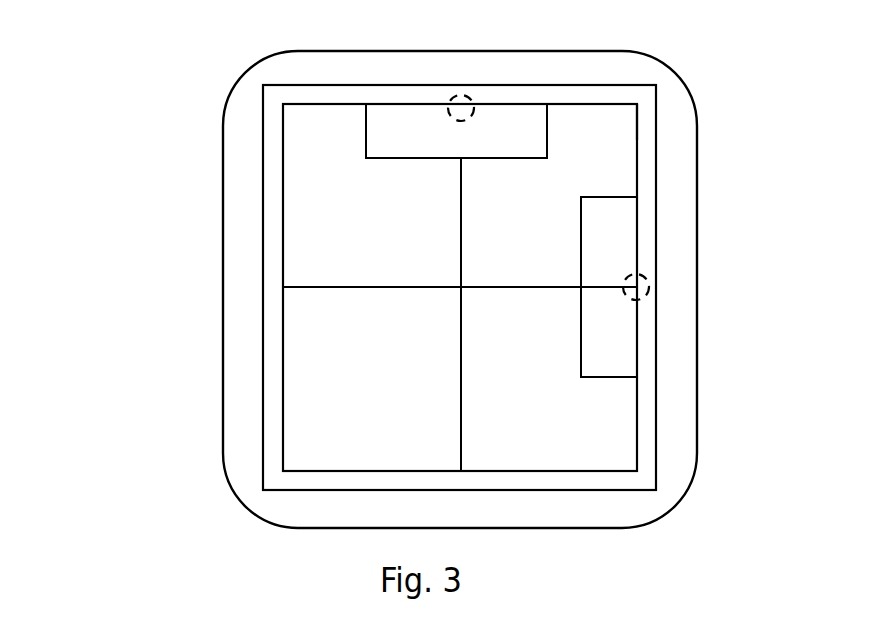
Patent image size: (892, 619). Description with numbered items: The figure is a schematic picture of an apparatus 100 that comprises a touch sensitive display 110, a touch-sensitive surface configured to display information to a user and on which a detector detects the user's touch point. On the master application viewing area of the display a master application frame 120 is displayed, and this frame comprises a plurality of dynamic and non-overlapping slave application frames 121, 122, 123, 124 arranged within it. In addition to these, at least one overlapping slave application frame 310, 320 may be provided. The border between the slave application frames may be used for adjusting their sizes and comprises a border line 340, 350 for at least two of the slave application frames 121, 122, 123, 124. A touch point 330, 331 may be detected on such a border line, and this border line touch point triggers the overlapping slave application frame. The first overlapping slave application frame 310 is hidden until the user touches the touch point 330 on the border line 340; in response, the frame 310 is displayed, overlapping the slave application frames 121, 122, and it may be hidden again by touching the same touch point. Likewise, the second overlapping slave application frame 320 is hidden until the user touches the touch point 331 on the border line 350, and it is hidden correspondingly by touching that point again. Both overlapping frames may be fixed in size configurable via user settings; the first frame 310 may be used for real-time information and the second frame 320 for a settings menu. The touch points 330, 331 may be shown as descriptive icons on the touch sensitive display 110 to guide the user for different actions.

The apparatus 100 is at (223, 124).
The touch sensitive display 110 is at (263, 194).
The master application frame 120 is at (283, 313).
The slave application frame 121 is at (372, 195).
The slave application frame 122 is at (549, 195).
The slave application frame 123 is at (372, 379).
The slave application frame 124 is at (549, 379).
The first overlapping slave application frame 310 is at (456, 134).
The second overlapping slave application frame 320 is at (609, 287).
The touch point 330 is at (466, 96).
The touch point 331 is at (622, 300).
The border line 340 is at (558, 103).
The border line 350 is at (638, 118).